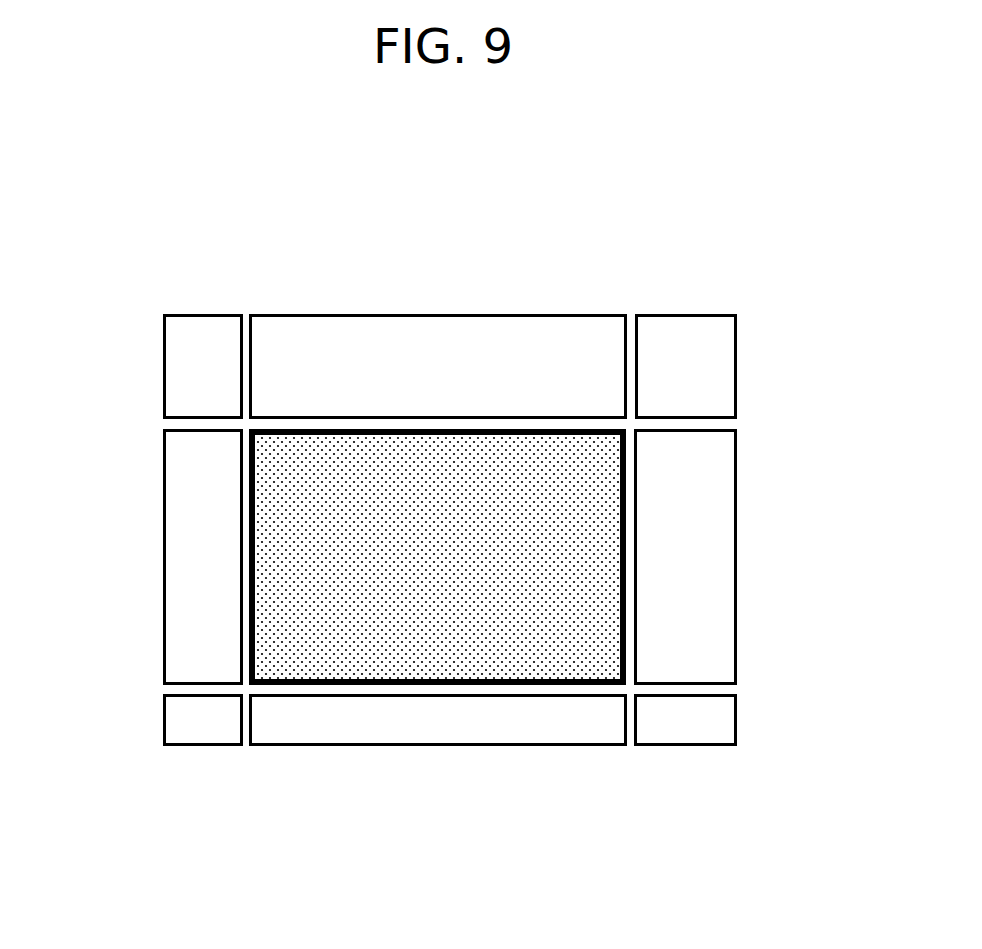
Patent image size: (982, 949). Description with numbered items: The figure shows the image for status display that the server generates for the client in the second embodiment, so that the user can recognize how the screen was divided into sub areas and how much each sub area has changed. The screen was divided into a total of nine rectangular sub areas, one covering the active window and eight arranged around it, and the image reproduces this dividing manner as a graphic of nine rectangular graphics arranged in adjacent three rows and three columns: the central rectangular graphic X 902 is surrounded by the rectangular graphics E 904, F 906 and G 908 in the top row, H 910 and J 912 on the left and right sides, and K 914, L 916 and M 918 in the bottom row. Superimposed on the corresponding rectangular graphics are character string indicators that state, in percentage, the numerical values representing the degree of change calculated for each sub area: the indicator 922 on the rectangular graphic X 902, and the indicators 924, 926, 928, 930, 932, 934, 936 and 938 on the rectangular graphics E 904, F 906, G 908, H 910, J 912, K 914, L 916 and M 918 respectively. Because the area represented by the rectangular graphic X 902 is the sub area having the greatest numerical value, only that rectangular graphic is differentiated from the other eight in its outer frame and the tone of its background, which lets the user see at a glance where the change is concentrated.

The rectangular graphic X 902 is at (590, 535).
The rectangular graphic E 904 is at (164, 332).
The rectangular graphic F 906 is at (380, 314).
The rectangular graphic G 908 is at (737, 333).
The rectangular graphic H 910 is at (164, 505).
The rectangular graphic J 912 is at (737, 447).
The rectangular graphic K 914 is at (193, 746).
The rectangular graphic L 916 is at (378, 746).
The rectangular graphic M 918 is at (697, 746).
The character string indicator 922 is at (580, 640).
The character string indicator 924 is at (185, 393).
The character string indicator 926 is at (583, 372).
The character string indicator 928 is at (692, 372).
The character string indicator 930 is at (185, 652).
The character string indicator 932 is at (718, 647).
The character string indicator 934 is at (185, 717).
The character string indicator 936 is at (543, 746).
The character string indicator 938 is at (720, 708).